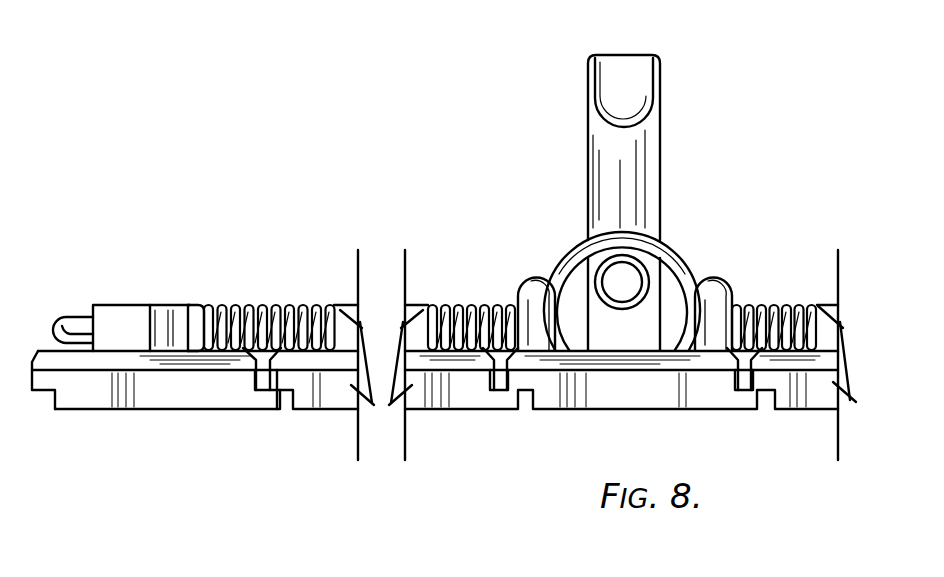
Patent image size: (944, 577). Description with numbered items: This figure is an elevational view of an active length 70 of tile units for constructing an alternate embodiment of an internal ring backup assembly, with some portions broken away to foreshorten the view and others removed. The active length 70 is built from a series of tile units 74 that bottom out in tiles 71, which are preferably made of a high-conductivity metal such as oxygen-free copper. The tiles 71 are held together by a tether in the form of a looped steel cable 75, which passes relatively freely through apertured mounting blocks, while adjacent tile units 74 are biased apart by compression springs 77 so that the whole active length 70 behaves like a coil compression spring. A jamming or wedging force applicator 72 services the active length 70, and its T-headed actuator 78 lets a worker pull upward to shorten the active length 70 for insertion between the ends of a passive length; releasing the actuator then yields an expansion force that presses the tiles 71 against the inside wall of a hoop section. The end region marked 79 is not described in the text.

The active length 70 is at (190, 185).
The tile 71 is at (232, 405).
The jamming or wedging force applicator 72 is at (533, 132).
The tile unit 74 is at (163, 400).
The looped steel cable 75 is at (70, 326).
The compression spring 77 is at (263, 305).
The T-headed actuator 78 is at (625, 67).
The plate end 79 is at (22, 398).